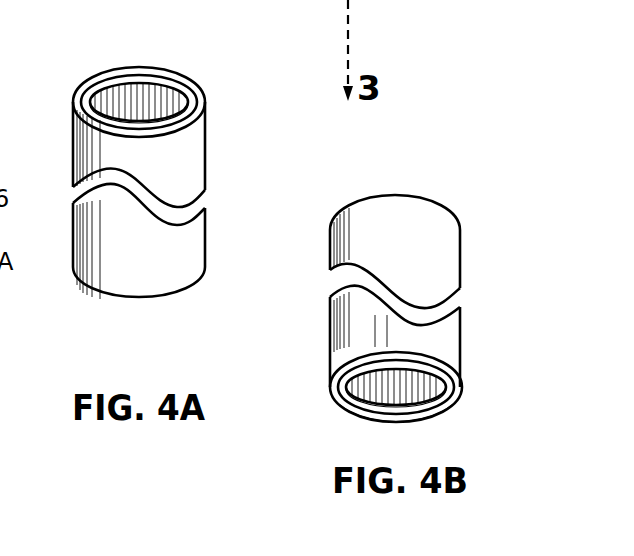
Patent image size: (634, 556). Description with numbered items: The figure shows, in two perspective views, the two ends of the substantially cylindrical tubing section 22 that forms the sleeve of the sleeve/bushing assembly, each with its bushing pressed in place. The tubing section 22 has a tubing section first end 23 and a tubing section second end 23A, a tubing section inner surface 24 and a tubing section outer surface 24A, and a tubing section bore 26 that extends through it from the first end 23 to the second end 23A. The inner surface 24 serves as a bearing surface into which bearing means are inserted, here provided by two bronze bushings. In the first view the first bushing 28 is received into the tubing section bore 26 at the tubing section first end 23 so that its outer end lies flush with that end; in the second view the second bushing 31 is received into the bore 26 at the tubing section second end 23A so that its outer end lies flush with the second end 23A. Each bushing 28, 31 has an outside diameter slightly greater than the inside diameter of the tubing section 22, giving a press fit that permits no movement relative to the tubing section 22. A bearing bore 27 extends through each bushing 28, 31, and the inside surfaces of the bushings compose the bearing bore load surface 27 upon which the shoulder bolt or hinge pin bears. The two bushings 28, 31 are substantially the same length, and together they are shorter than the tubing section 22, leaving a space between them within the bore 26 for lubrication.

In FIG. 4A, the tubing section 22 is at (197, 95).
In FIG. 4B, the tubing section 22 is at (337, 382).
In FIG. 4A, the tubing section first end 23 is at (140, 66).
In FIG. 4B, the tubing section first end 23 is at (417, 193).
In FIG. 4A, the tubing section second end 23A is at (110, 297).
In FIG. 4B, the tubing section second end 23A is at (383, 422).
In FIG. 4A, the tubing section inner surface 24 is at (157, 110).
In FIG. 4B, the tubing section inner surface 24 is at (373, 390).
In FIG. 4A, the tubing section outer surface 24A is at (82, 152).
In FIG. 4B, the tubing section outer surface 24A is at (440, 342).
In FIG. 4A, the tubing section bore 26 is at (165, 85).
In FIG. 4B, the tubing section bore 26 is at (453, 400).
In FIG. 4A, the bearing bore 27 is at (125, 100).
In FIG. 4B, the bearing bore 27 is at (400, 385).
In FIG. 4A, the first bushing 28 is at (185, 115).
In FIG. 4B, the second bushing 31 is at (448, 384).